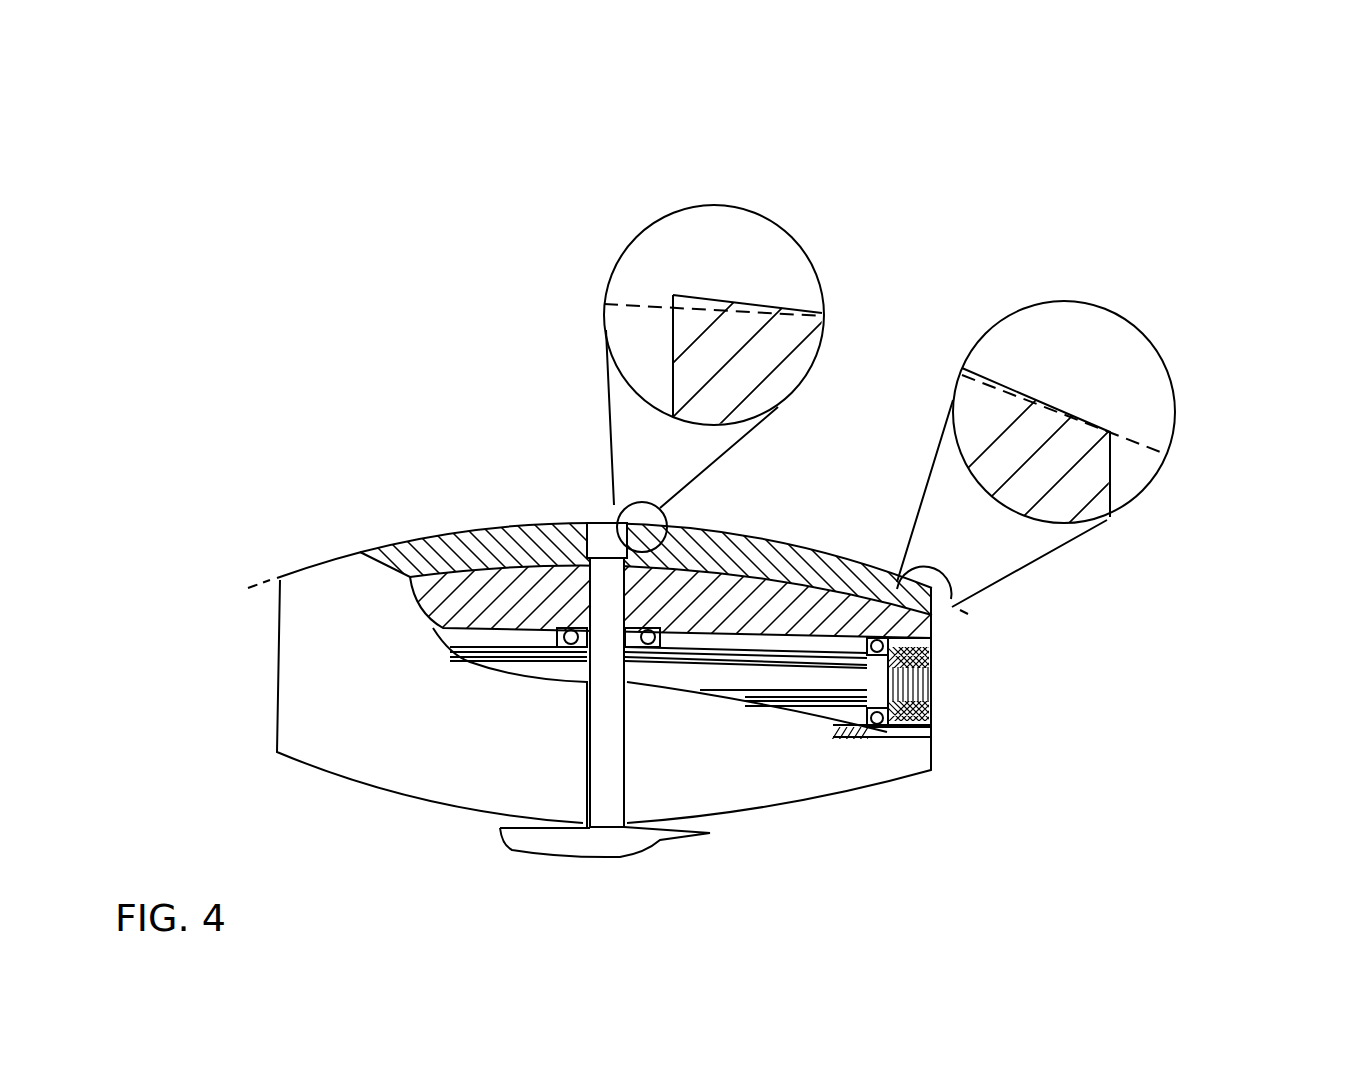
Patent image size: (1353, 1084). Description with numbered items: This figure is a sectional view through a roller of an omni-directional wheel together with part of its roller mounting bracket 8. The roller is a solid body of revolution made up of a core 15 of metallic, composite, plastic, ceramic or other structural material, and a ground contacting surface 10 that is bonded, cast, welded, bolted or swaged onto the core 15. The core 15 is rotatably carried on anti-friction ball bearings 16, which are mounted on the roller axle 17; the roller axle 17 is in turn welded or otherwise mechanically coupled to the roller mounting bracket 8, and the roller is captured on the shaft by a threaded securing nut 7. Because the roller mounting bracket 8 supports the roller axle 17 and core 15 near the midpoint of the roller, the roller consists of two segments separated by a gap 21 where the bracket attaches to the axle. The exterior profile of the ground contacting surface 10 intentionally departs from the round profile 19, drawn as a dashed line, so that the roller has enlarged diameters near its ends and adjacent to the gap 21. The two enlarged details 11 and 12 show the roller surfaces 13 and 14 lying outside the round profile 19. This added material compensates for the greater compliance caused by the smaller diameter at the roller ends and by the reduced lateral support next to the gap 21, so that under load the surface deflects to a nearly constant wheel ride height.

The threaded securing nut 7 is at (927, 720).
The roller mounting bracket 8 is at (597, 743).
The ground contacting surface 10 is at (743, 557).
The detail 11 is at (815, 272).
The detail 12 is at (1150, 490).
The roller surface 13 is at (698, 294).
The roller surface 14 is at (1060, 400).
The core 15 is at (497, 595).
The anti-friction bearings 16 is at (565, 628).
The roller axle 17 is at (937, 680).
The round profile 19 is at (635, 303).
The gap 21 is at (595, 520).